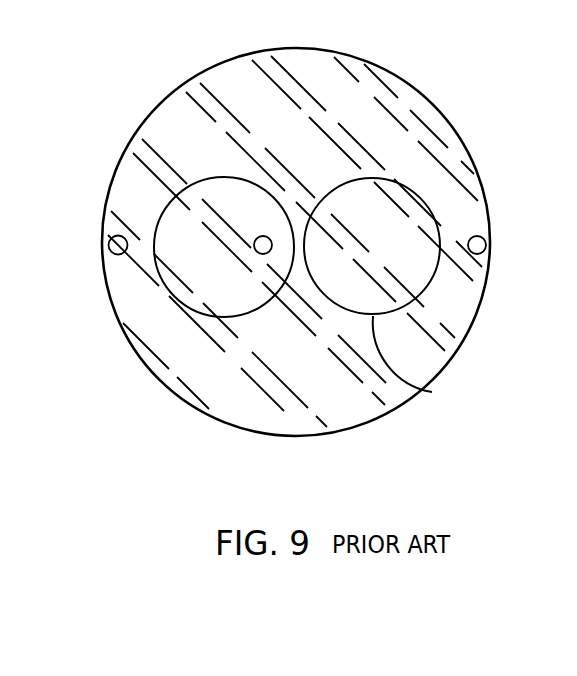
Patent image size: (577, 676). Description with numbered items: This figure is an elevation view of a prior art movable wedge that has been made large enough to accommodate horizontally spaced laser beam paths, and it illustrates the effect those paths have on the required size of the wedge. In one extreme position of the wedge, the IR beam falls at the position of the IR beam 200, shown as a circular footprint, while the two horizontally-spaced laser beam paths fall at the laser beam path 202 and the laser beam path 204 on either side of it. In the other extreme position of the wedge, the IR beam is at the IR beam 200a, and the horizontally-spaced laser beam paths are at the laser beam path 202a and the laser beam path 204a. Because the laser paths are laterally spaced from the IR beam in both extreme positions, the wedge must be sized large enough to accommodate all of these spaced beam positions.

The IR beam 200 is at (265, 305).
The IR beam 200a is at (427, 388).
The laser beam path 202 is at (110, 254).
The laser beam path 202a is at (254, 247).
The laser beam path 204 is at (343, 244).
The laser beam path 204a is at (481, 254).